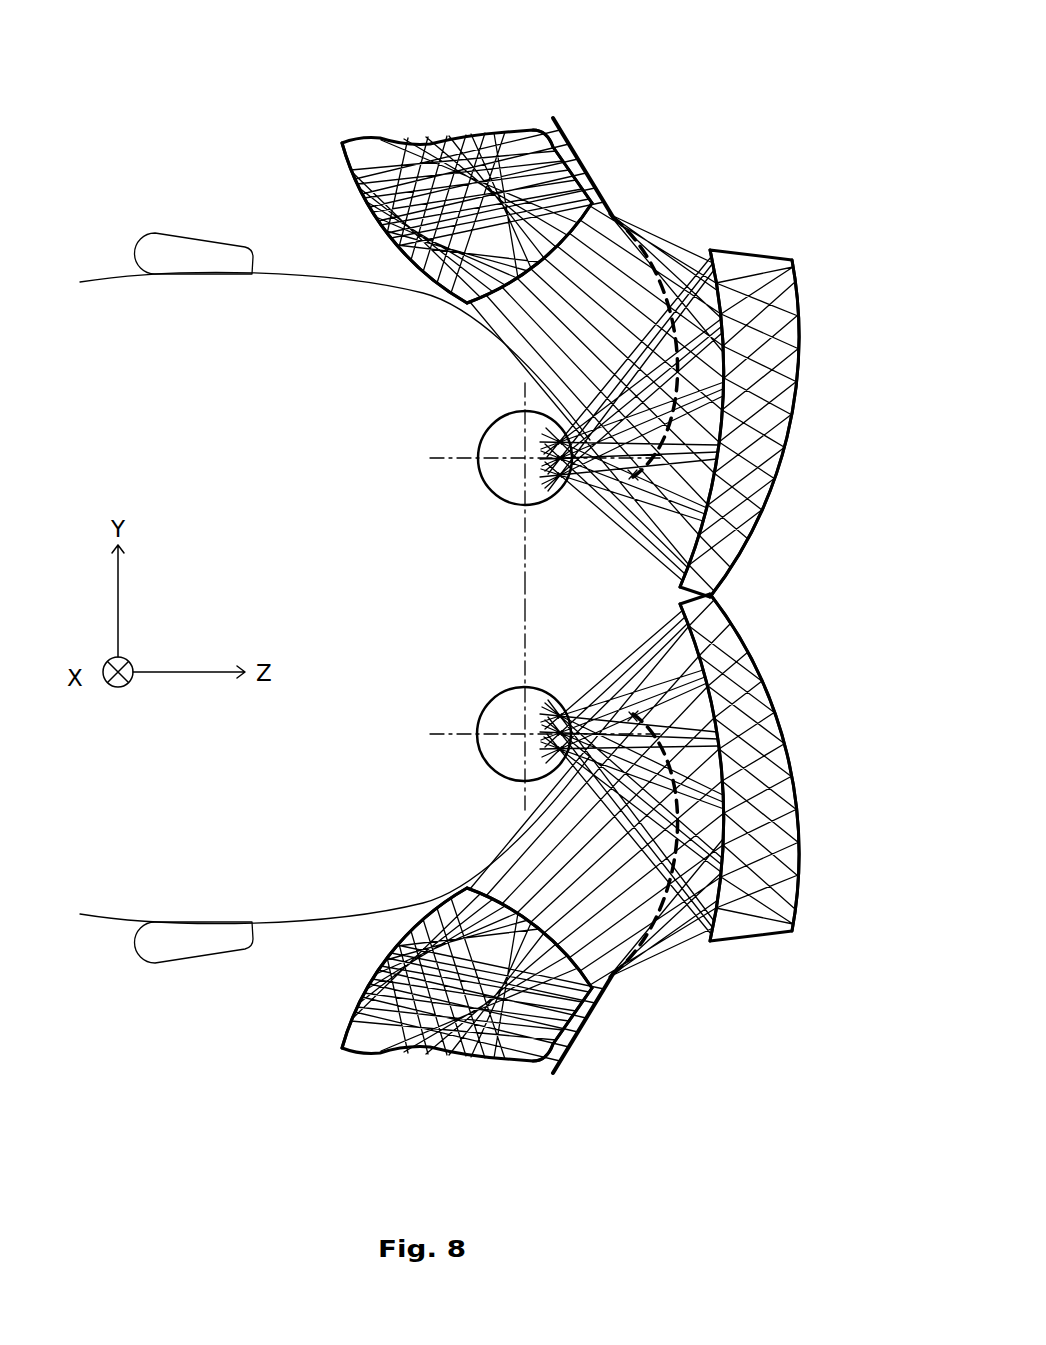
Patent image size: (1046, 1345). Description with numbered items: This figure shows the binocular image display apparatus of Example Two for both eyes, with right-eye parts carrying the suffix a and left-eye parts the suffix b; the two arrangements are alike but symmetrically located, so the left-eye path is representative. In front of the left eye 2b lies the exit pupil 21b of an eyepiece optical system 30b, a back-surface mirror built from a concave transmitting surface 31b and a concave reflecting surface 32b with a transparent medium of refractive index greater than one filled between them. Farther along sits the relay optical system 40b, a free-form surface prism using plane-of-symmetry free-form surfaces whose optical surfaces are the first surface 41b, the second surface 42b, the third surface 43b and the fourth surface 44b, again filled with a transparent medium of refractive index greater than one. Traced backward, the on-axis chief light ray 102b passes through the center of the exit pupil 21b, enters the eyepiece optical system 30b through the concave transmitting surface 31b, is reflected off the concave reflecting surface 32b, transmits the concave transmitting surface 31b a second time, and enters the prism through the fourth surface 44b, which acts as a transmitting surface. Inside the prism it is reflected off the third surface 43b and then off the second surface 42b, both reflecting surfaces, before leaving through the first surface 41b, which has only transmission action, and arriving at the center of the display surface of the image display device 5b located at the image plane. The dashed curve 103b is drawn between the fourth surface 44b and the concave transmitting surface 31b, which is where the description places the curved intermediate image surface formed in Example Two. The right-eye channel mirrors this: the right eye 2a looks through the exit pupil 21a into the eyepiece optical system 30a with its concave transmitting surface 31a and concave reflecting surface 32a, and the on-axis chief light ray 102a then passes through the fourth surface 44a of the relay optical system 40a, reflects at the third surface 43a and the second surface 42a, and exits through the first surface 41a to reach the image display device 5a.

The relay optical system 40b is at (493, 205).
The third surface 43b is at (455, 138).
The first surface 41b is at (548, 116).
The second surface 42b is at (362, 222).
The fourth surface 44b is at (487, 301).
The image display device 5b is at (599, 162).
The optical axis path 103b is at (640, 221).
The eyepiece optical system 30b is at (796, 401).
The concave transmitting surface 31b is at (724, 282).
The concave reflecting surface 32b is at (807, 347).
The eye 2b is at (496, 487).
The exit pupil 21b is at (562, 486).
The on-axis chief light ray 102b is at (603, 460).
The relay optical system 40a is at (477, 995).
The third surface 43a is at (455, 1053).
The first surface 41a is at (548, 1075).
The second surface 42a is at (352, 1002).
The fourth surface 44a is at (487, 890).
The image display device 5a is at (598, 1030).
The eyepiece optical system 30a is at (796, 793).
The concave transmitting surface 31a is at (750, 942).
The concave reflecting surface 32a is at (807, 844).
The eye 2a is at (496, 769).
The exit pupil 21a is at (562, 705).
The on-axis chief light ray 102a is at (603, 731).